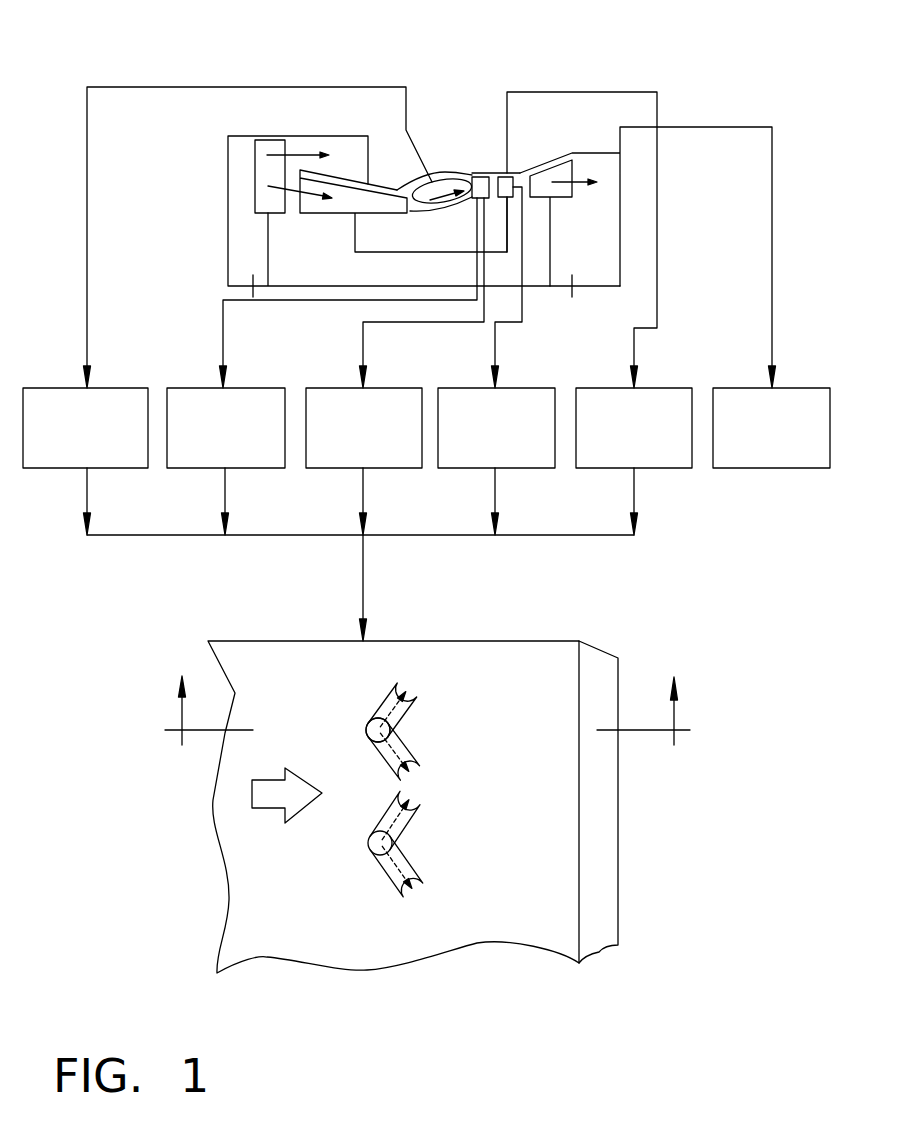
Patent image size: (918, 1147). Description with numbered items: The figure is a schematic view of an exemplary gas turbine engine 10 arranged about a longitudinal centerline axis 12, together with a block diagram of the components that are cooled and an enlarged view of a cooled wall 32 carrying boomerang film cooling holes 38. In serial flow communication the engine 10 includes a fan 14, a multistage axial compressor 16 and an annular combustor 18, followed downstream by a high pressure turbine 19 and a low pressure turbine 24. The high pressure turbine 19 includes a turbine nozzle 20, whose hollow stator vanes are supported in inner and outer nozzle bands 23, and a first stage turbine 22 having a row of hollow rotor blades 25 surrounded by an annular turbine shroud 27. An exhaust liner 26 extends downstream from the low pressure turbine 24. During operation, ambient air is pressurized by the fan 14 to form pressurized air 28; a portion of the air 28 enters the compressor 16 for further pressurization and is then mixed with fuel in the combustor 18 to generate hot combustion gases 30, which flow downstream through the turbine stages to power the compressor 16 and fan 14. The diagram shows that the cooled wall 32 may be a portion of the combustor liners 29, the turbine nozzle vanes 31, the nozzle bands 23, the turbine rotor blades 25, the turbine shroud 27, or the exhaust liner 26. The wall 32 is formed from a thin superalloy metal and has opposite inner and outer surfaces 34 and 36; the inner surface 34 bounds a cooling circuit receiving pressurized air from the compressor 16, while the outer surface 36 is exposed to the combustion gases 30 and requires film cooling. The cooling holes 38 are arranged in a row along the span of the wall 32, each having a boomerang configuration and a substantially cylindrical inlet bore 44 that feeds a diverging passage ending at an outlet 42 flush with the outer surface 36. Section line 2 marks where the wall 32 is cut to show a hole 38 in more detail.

The section line 2- 2 is at (426, 710).
The turbine engine 10 is at (136, 80).
The longitudinal centerline axis 12 is at (367, 284).
The fan 14 is at (253, 175).
The multistage axial compressor 16 is at (342, 208).
The annular combustor 18 is at (432, 176).
The high pressure turbine 19 is at (428, 102).
The turbine nozzle 20 is at (478, 176).
The first stage turbine 22 is at (502, 176).
The nozzle bands 23 is at (387, 387).
The low pressure turbine 24 is at (557, 198).
The rotor blades 25 is at (520, 387).
The exhaust liner 26 is at (598, 152).
The turbine shroud 27 is at (657, 387).
The pressurized air 28 is at (298, 154).
The combustor liners 29 is at (110, 387).
The hot combustion gases 30 is at (446, 207).
The turbine nozzle vanes 31 is at (248, 387).
The wall 32 is at (518, 641).
The inner wall surface 34 is at (619, 787).
The outer wall surface 36 is at (506, 843).
The film cooling holes 38 is at (365, 692).
The outlet 42 is at (395, 893).
The inlet bore 44 is at (368, 734).